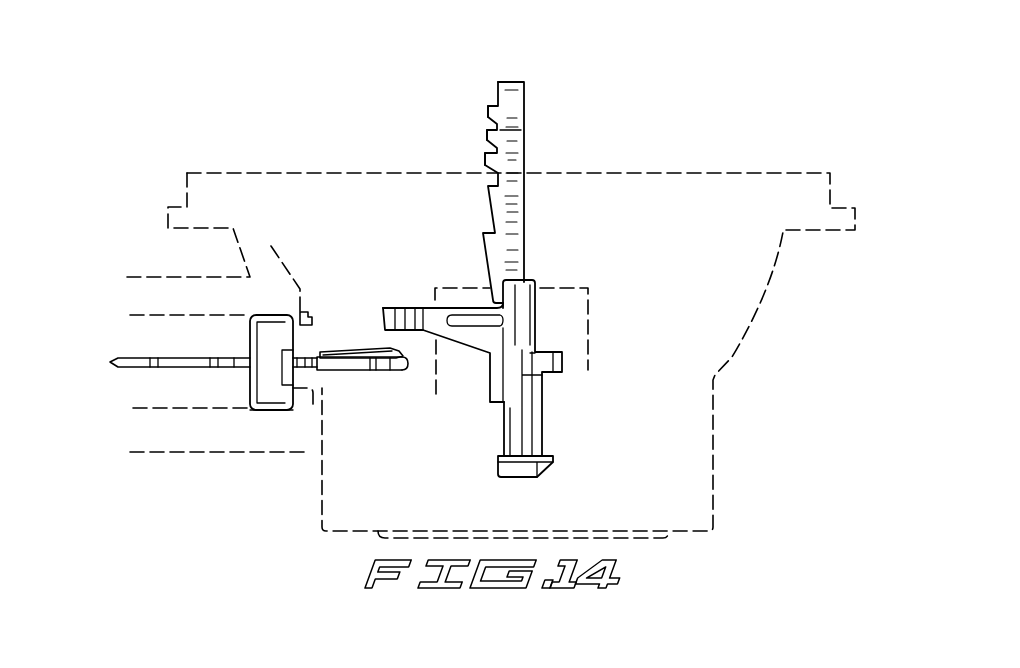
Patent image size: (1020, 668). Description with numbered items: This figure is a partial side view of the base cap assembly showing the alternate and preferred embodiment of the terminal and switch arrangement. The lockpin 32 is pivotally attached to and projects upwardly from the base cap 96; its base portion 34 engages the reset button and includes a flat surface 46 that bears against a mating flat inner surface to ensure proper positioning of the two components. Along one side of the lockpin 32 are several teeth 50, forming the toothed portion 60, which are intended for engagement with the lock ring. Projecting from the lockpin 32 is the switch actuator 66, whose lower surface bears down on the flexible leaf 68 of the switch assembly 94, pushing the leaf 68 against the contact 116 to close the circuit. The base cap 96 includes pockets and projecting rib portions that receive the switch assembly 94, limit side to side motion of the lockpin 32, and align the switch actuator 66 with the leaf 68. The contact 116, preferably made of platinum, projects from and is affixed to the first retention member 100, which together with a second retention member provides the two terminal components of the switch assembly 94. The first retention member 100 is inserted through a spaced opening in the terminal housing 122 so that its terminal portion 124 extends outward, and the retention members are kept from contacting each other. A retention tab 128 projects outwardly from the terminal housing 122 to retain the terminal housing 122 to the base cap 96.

The lockpin 32 is at (525, 205).
The base portion 34 is at (530, 432).
The flat surface 46 is at (497, 437).
The teeth 50 is at (492, 160).
The toothed portion 60 is at (512, 138).
The switch actuator 66 is at (399, 308).
The leaf 68 is at (356, 350).
The switch assembly 94 is at (272, 412).
The base cap 96 is at (743, 343).
The first retention member 100 is at (352, 371).
The contact 116 is at (397, 372).
The terminal housing 122 is at (265, 392).
The terminal portion 124 is at (153, 367).
The retention tab 128 is at (310, 312).